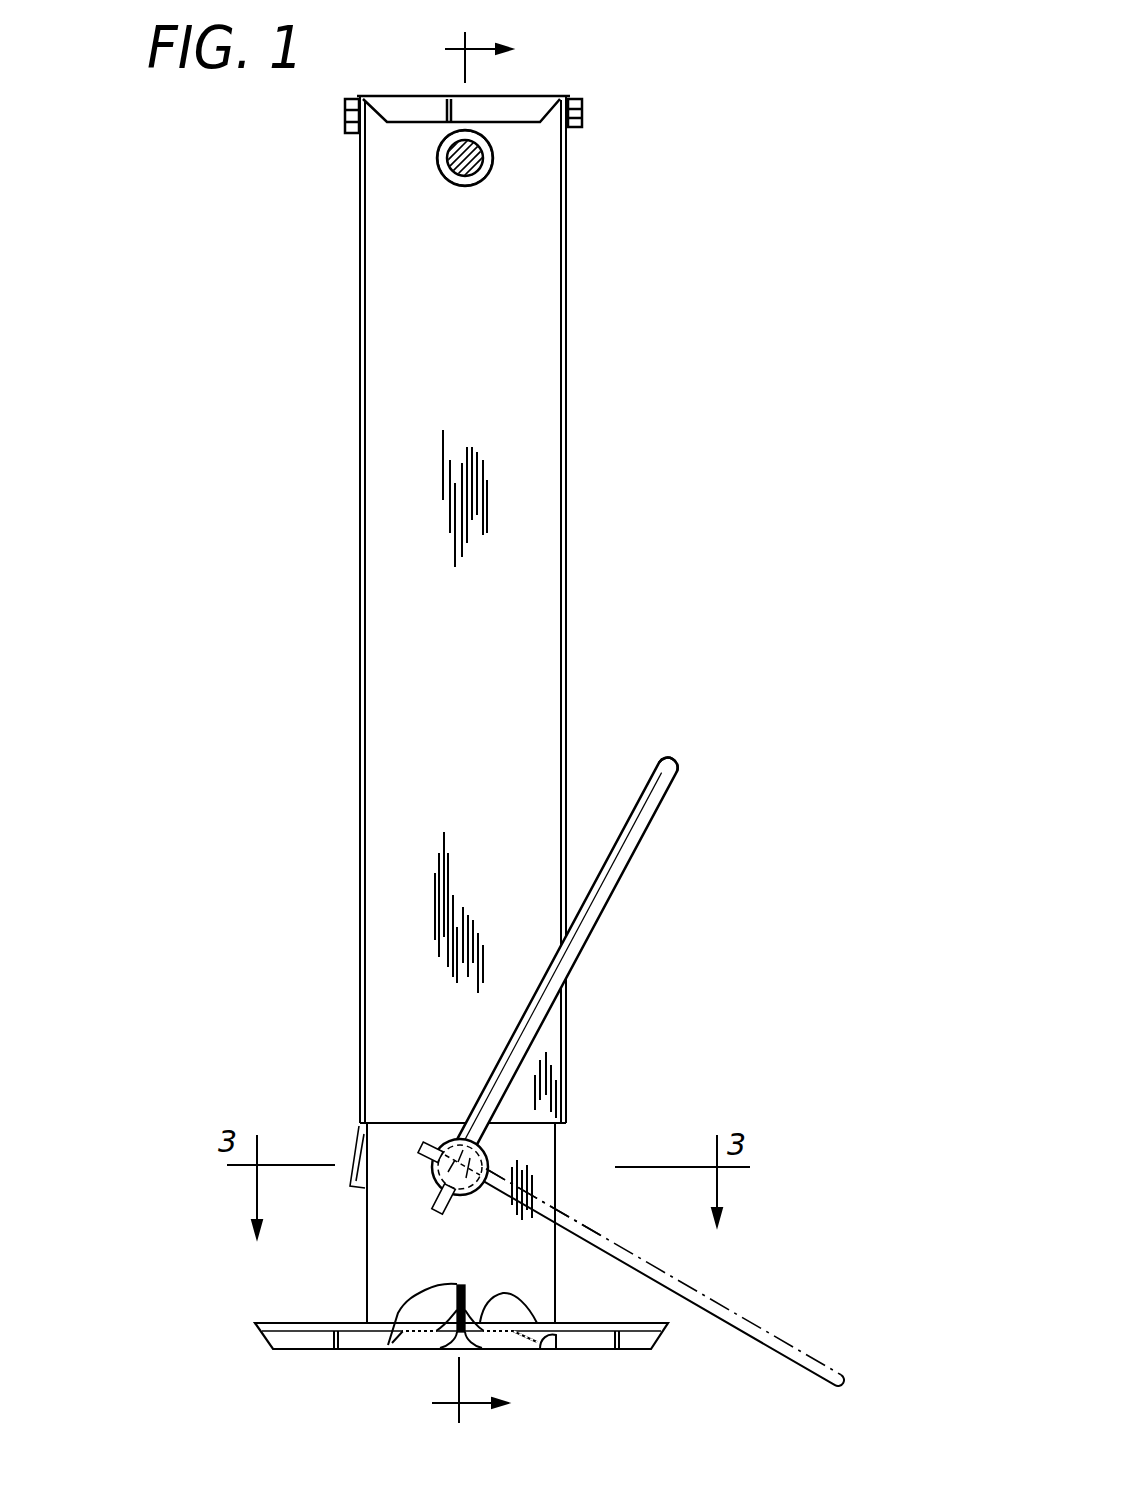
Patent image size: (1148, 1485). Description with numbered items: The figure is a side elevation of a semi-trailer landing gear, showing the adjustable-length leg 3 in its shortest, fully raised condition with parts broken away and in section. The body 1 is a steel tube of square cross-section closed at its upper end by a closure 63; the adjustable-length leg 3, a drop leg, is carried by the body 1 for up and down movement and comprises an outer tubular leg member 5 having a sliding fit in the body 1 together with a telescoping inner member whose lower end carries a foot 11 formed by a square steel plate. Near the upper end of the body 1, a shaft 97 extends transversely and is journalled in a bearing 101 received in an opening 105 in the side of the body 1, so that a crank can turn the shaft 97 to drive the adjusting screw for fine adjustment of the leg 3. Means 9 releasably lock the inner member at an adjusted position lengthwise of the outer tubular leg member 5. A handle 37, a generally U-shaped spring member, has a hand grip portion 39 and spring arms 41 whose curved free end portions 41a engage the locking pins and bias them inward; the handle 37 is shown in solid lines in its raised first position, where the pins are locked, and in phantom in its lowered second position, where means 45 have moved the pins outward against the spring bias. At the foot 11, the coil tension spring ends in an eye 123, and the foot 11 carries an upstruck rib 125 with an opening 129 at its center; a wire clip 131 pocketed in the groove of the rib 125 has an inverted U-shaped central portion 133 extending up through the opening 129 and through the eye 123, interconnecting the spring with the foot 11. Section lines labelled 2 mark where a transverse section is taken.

The body 1 is at (575, 235).
The section line 2- 2 is at (462, 728).
The adjustable-length leg 3 is at (352, 1203).
The outer tubular leg member 5 is at (558, 1157).
The means for releasably locking the inner member 9 is at (622, 956).
The foot 11 is at (652, 1348).
The handle 37 is at (660, 831).
The hand grip portion 39 is at (674, 764).
The spring arms 41 is at (588, 1226).
The free end portions of the spring arms 41a is at (440, 1212).
The means for effecting outward movement of the pins 45 is at (430, 1126).
The closure 63 is at (537, 97).
The shaft 97 is at (471, 171).
The bearing 101 is at (436, 154).
The opening 105 is at (462, 186).
The eye 123 is at (456, 1300).
The upstruck rib 125 is at (510, 1323).
The opening 129 is at (490, 1306).
The clip 131 is at (422, 1343).
The central portion of the clip 133 is at (478, 1303).